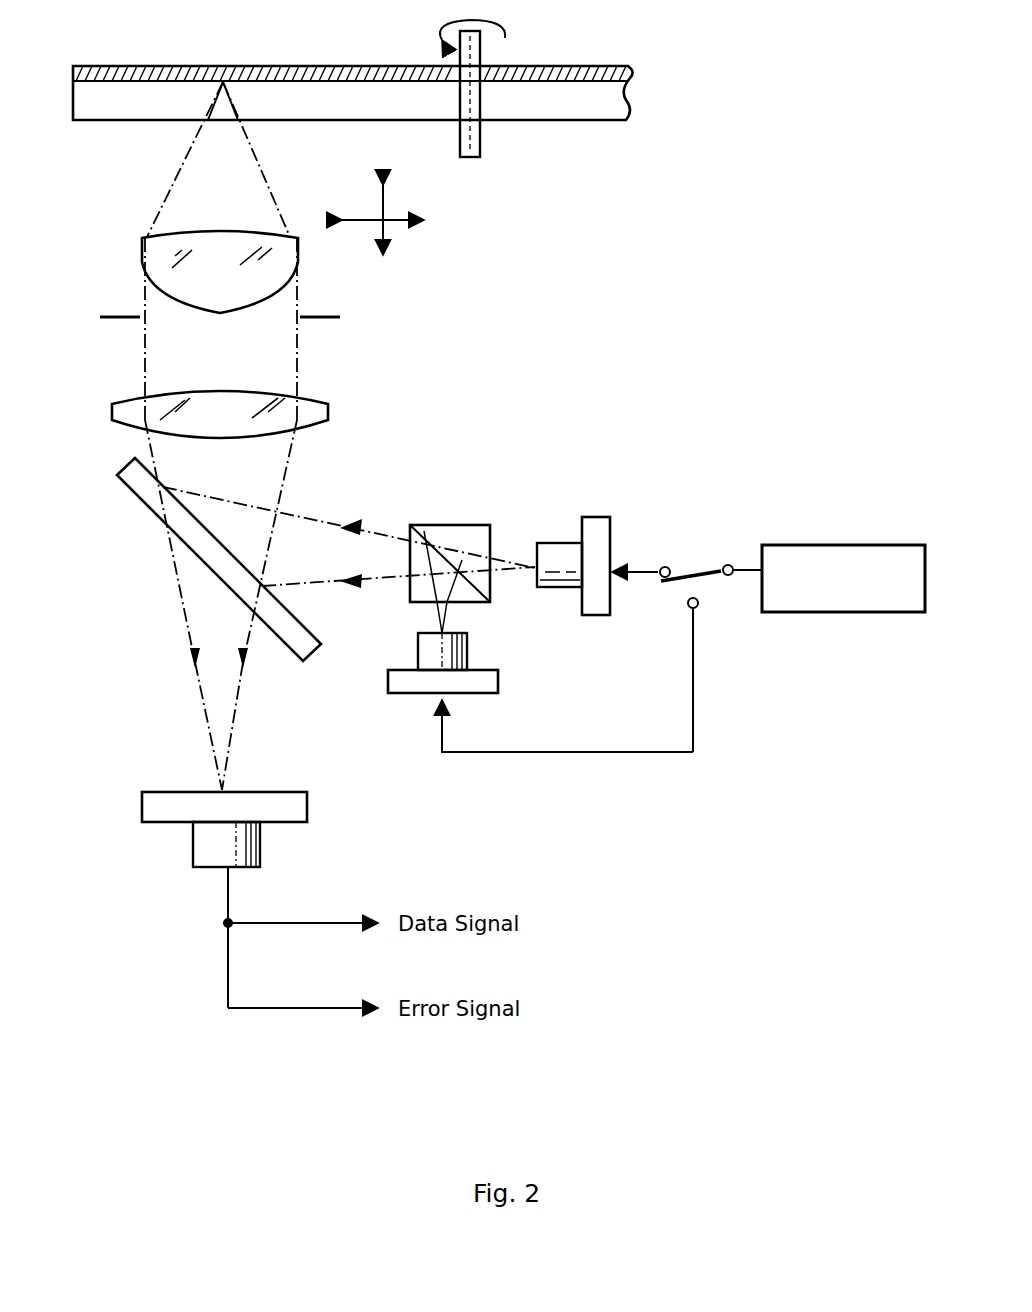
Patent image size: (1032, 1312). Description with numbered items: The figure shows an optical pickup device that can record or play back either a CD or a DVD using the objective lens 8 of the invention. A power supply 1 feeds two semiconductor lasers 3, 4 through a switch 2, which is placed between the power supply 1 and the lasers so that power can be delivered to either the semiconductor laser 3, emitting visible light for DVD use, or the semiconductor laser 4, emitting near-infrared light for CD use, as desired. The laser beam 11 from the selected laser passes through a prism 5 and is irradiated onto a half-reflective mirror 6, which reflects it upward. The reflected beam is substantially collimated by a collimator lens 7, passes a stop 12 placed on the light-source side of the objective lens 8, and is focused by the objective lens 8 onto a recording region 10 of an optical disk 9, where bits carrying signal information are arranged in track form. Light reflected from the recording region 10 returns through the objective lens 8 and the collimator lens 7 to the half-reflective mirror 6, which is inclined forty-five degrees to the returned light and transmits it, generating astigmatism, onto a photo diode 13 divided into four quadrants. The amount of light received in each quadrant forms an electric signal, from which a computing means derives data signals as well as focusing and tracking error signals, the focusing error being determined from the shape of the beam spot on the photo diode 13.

The power supply 1 is at (812, 545).
The switch 2 is at (693, 565).
The semiconductor laser 3 is at (553, 543).
The semiconductor laser 4 is at (467, 650).
The prism 5 is at (432, 527).
The half-reflective mirror 6 is at (148, 487).
The collimator lens 7 is at (330, 412).
The objective lens 8 is at (142, 250).
The optical disk 9 is at (118, 104).
The recording region 10 is at (137, 65).
The laser beam 11 is at (323, 520).
The stop 12 is at (122, 321).
The photo diode 13 is at (290, 792).